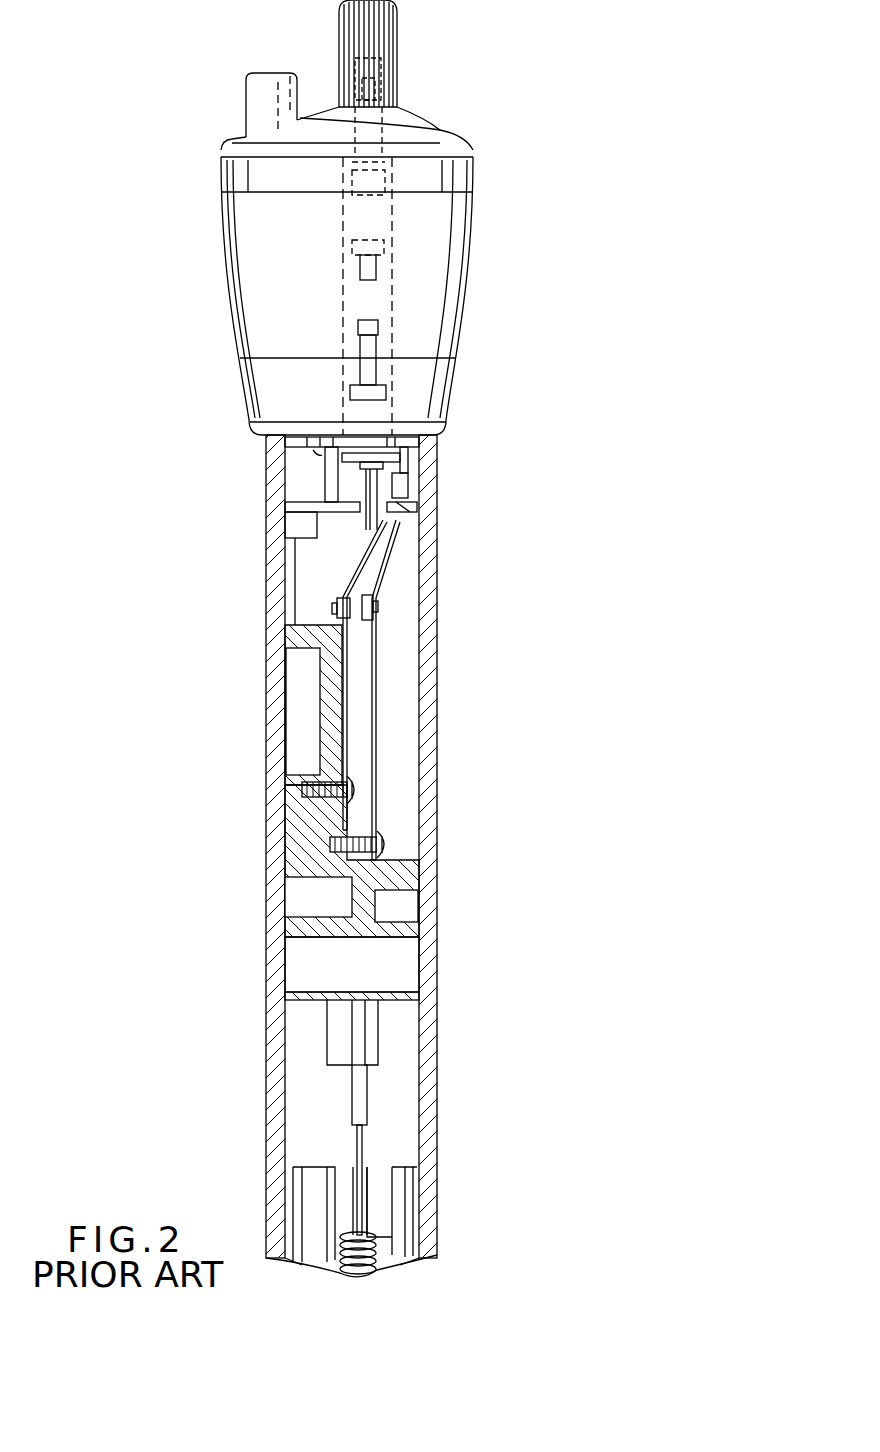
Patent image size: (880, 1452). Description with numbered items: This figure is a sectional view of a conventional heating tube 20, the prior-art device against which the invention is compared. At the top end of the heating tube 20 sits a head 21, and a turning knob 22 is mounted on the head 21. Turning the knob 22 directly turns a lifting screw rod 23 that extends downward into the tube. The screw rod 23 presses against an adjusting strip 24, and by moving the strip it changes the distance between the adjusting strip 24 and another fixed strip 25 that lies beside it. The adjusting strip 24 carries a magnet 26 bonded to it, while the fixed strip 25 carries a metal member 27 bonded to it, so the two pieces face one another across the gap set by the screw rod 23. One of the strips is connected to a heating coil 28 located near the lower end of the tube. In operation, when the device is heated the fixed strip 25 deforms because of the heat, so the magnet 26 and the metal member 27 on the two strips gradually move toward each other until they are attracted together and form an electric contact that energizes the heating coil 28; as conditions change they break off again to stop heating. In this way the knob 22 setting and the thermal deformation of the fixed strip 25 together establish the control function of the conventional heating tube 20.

The heating tube 20 is at (528, 847).
The head 21 is at (243, 270).
The turning knob 22 is at (385, 40).
The lifting screw rod 23 is at (368, 462).
The adjusting strip 24 is at (355, 560).
The fixed strip 25 is at (374, 695).
The magnet 26 is at (336, 608).
The metal member 27 is at (378, 607).
The heating coil 28 is at (365, 1268).